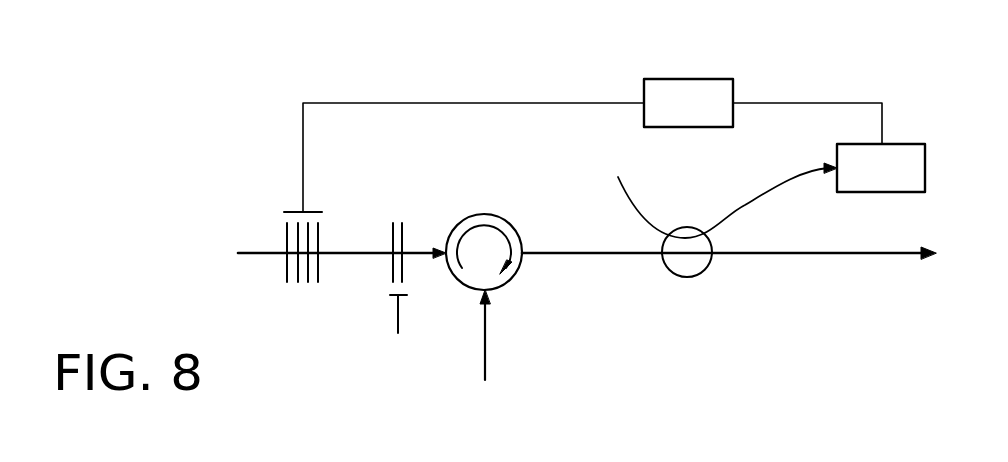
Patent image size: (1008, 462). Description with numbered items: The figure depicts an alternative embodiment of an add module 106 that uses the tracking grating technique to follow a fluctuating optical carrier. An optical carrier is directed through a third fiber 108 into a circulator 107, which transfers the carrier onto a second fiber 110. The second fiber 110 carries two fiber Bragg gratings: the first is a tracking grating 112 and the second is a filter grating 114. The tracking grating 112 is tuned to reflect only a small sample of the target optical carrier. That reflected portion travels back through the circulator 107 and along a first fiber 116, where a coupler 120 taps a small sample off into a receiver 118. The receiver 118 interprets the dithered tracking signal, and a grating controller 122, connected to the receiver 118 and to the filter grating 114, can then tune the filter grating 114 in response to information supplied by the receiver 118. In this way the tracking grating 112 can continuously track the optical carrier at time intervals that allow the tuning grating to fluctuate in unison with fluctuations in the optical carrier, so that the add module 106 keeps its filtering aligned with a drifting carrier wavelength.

The add module 106 is at (822, 51).
The circulator 107 is at (502, 213).
The third fiber 108 is at (484, 371).
The second fiber 110 is at (356, 257).
The tracking grating 112 is at (397, 222).
The filter grating 114 is at (301, 283).
The first fiber 116 is at (597, 258).
The receiver 118 is at (771, 191).
The coupler 120 is at (683, 278).
The grating controller 122 is at (688, 103).